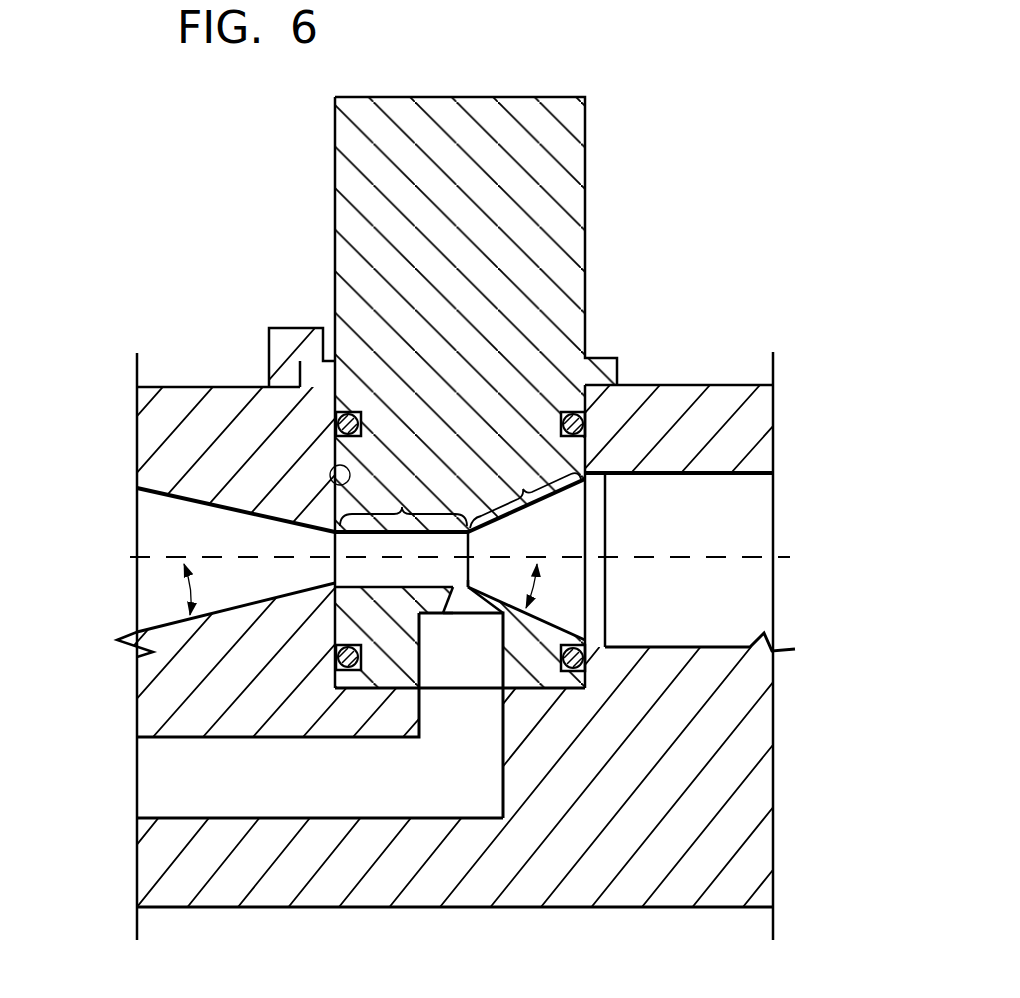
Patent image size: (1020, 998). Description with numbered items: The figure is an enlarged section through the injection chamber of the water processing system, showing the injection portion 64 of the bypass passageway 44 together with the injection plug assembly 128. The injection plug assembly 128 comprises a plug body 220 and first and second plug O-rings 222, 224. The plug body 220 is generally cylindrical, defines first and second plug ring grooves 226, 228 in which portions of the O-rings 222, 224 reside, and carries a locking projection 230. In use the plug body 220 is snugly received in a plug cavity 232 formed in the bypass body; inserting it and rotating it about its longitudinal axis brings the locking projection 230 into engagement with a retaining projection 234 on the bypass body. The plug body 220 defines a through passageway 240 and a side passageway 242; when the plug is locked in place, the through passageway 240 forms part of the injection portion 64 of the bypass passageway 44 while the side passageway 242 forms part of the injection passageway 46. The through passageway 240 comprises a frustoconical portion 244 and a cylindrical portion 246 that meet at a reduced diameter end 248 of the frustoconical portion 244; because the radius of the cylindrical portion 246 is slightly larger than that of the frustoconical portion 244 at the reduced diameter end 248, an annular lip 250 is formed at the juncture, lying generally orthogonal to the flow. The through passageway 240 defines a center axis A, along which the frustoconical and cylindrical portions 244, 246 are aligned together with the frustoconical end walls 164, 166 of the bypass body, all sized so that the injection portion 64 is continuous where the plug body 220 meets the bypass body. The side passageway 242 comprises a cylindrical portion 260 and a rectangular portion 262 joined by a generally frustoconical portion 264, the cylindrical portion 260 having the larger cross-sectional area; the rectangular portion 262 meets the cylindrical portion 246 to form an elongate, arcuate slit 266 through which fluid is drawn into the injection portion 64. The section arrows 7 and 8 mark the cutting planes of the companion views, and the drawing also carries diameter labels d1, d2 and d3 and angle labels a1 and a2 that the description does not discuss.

The injection plug assembly 128 is at (608, 70).
The plug body 220 is at (597, 155).
The first plug O-ring 222 is at (593, 420).
The second plug O-ring 224 is at (597, 653).
The first plug ring groove 226 is at (565, 410).
The second plug ring groove 228 is at (470, 662).
The locking projection 230 is at (586, 430).
The plug cavity 232 is at (331, 482).
The retaining projection 234 is at (313, 352).
The through passageway 240 is at (616, 540).
The side passageway 242 is at (462, 737).
The frustoconical portion 244 is at (572, 577).
The cylindrical portion 246 is at (146, 677).
The reduced diameter end 248 is at (556, 503).
The annular lip 250 is at (466, 536).
The cylindrical portion 260 is at (500, 690).
The rectangular portion 262 is at (447, 613).
The frustoconical portion 264 is at (456, 590).
The arcuate slit 266 is at (463, 563).
The frustoconical end wall 164 is at (656, 473).
The frustoconical end wall 166 is at (152, 501).
The injection portion 64 is at (792, 488).
The bypass passageway 44 is at (797, 520).
The injection passageway 46 is at (620, 785).
The section line 7- 7 is at (462, 78).
The section line 8- 8 is at (120, 557).
The center axis A is at (150, 557).
The throat diameter d1 is at (524, 489).
The bore diameter d2 is at (403, 498).
The sleeve diameter d3 is at (600, 464).
The divergence angle a1 is at (588, 603).
The convergence angle a2 is at (185, 594).